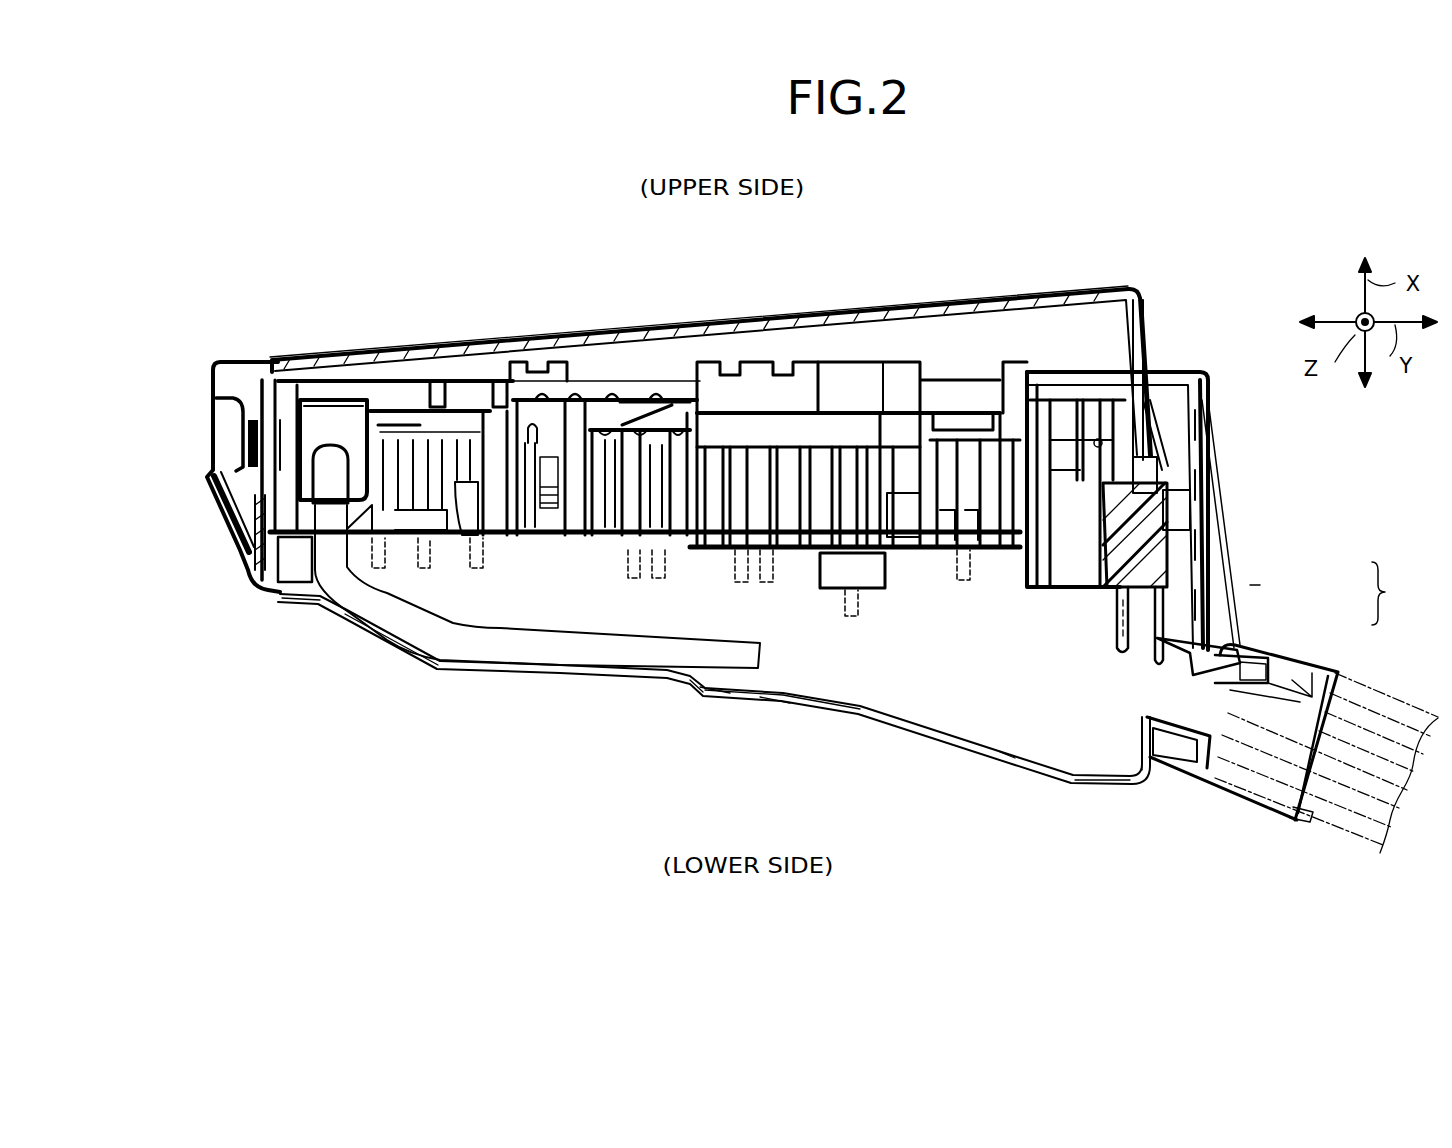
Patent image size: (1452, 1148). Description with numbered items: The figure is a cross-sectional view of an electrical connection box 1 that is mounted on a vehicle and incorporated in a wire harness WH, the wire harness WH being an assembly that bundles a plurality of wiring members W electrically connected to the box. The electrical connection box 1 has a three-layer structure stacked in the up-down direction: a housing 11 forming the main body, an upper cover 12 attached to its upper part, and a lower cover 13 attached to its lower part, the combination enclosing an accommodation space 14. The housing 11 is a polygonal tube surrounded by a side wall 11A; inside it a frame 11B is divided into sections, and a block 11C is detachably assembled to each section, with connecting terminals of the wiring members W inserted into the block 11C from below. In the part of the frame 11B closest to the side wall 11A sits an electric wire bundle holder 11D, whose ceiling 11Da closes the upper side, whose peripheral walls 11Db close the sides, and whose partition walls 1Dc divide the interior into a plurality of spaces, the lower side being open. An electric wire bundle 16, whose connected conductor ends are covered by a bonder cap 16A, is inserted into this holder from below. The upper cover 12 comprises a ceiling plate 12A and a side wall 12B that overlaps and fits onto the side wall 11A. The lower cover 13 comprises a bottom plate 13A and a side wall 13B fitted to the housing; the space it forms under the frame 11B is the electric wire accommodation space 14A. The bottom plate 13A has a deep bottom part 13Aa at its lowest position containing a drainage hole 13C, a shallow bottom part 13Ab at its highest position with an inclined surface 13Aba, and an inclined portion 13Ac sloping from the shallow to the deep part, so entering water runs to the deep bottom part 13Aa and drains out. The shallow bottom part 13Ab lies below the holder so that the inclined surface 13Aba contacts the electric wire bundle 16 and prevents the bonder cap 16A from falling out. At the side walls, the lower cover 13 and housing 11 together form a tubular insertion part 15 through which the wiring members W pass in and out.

The electrical connection box 1 is at (1247, 586).
The locking hook 1Dc is at (240, 404).
The housing 11 is at (1208, 504).
The side wall 11A is at (1209, 466).
The frame 11B is at (468, 380).
The block 11C is at (668, 395).
The electric wire bundle holder 11D is at (342, 418).
The ceiling 11Da is at (328, 400).
The peripheral wall 11Db is at (310, 478).
The upper cover 12 is at (968, 300).
The ceiling plate 12A is at (1042, 292).
The side wall 12B is at (1152, 325).
The lower cover 13 is at (903, 727).
The bottom plate 13A is at (772, 700).
The deep bottom part 13Aa is at (1100, 788).
The shallow bottom part 13Ab is at (323, 600).
The inclined surface 13Aba is at (347, 618).
The inclined portion 13Ac is at (703, 695).
The side wall 13B is at (1000, 700).
The drainage hole 13C is at (1125, 786).
The accommodation space 14 is at (1037, 347).
The electric wire accommodation space 14A is at (1133, 623).
The insertion part 15 is at (1250, 805).
The electric wire bundle 16 is at (582, 650).
The bonder cap 16A is at (330, 478).
The wiring member W is at (478, 572).
The wire harness WH is at (1400, 593).